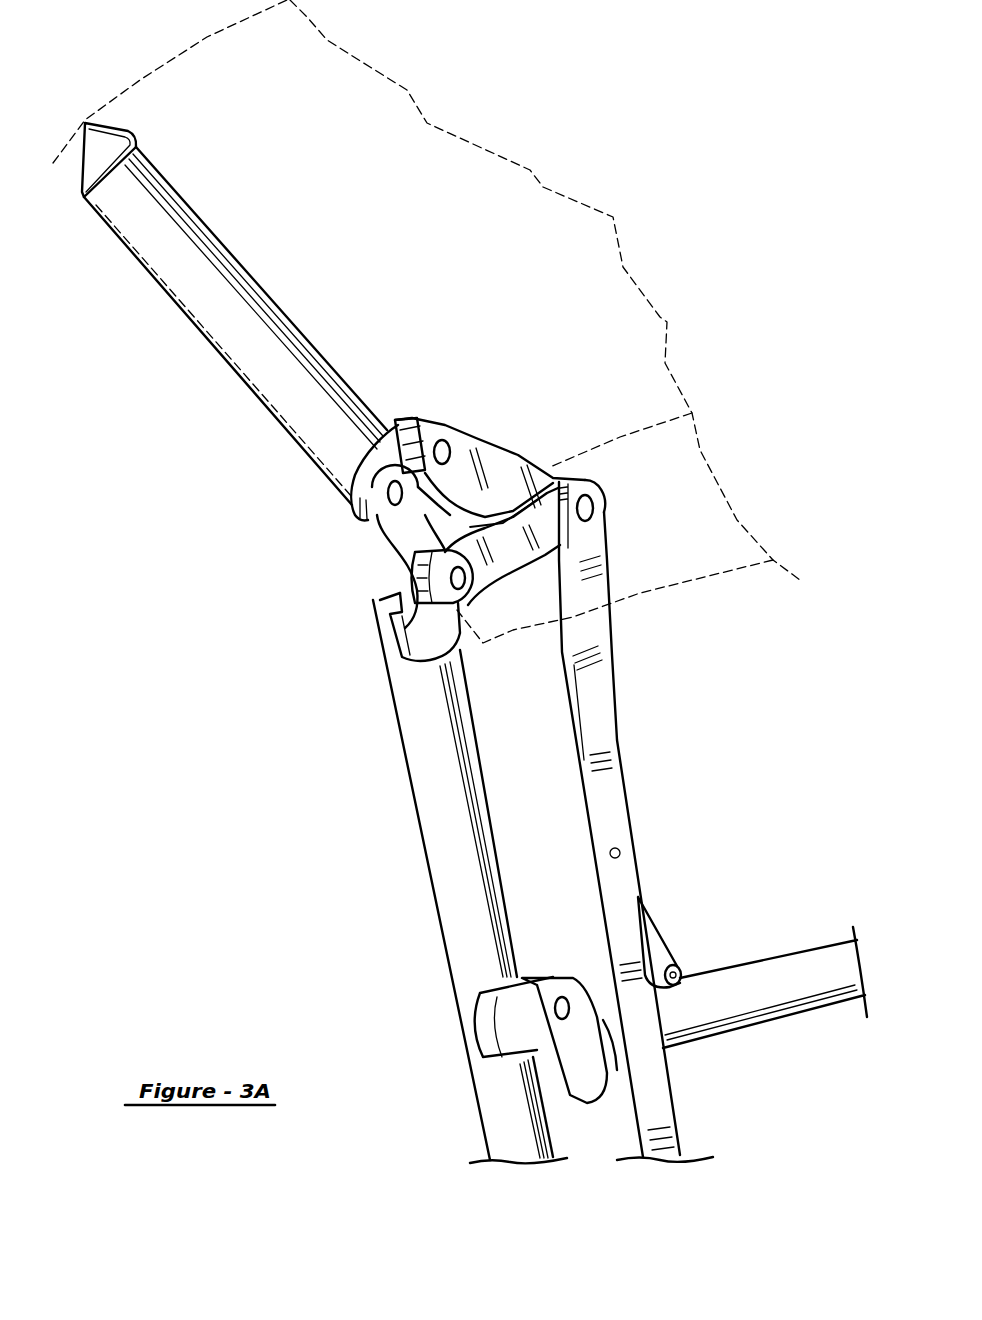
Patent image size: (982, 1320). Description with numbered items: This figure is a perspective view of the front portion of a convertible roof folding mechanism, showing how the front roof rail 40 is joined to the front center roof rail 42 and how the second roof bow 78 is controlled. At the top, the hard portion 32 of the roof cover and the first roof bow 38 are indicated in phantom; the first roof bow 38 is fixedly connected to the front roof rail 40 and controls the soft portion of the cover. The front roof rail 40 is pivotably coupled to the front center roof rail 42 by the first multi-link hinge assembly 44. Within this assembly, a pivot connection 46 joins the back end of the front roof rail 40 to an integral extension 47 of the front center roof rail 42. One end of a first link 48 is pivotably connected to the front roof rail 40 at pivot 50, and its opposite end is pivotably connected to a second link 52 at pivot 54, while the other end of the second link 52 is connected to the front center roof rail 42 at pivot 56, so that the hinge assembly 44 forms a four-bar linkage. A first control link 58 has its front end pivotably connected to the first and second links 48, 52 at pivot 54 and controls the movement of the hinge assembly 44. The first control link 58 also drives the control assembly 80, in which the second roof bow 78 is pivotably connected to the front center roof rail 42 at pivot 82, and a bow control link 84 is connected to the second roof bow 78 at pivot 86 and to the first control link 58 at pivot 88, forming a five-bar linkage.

The hard portion 32 is at (330, 193).
The first roof bow 38 is at (388, 276).
The front roof rail 40 is at (263, 348).
The front center roof rail 42 is at (440, 843).
The first multi-link hinge assembly 44 is at (520, 385).
The pivot connection 46 is at (385, 495).
The integral extension 47 is at (403, 538).
The first link 48 is at (497, 477).
The pivot 50 is at (444, 440).
The second link 52 is at (513, 567).
The pivot 54 is at (593, 508).
The pivot 56 is at (452, 578).
The first control link 58 is at (597, 730).
The second roof bow 78 is at (773, 992).
The control assembly 80 is at (687, 840).
The pivot 82 is at (563, 1000).
The bow control link 84 is at (650, 933).
The pivot 86 is at (678, 967).
The pivot 88 is at (620, 851).